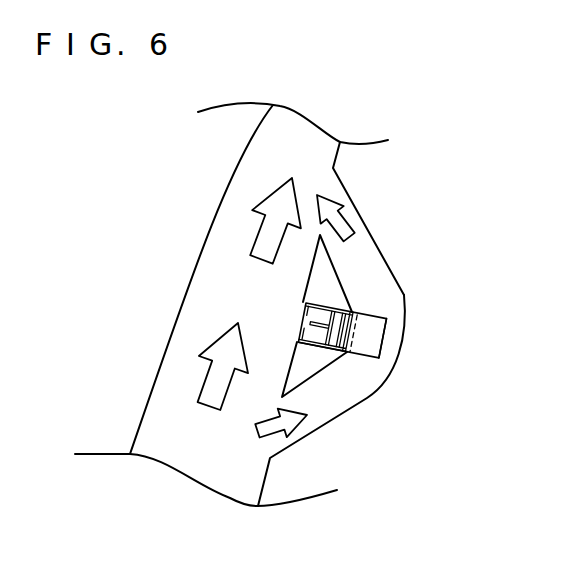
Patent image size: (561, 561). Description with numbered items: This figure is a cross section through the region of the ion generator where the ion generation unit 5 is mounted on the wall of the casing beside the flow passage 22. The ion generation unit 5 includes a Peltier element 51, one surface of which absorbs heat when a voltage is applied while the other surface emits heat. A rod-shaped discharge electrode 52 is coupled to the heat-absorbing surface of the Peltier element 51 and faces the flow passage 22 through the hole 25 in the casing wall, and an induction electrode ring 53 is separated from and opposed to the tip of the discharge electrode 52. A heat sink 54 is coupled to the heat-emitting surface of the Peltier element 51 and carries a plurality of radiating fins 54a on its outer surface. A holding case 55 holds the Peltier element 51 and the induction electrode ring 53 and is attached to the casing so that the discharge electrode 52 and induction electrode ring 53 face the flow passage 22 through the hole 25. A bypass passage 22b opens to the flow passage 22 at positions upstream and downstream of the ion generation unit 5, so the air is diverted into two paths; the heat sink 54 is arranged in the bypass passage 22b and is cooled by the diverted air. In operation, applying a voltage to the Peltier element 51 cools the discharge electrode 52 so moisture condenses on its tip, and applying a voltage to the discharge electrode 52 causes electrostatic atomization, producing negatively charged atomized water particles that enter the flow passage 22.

The flow passage 22 is at (257, 294).
The bypass passage 22b is at (345, 396).
The hole 25 is at (298, 307).
The ion generation unit 5 is at (319, 381).
The Peltier element 51 is at (350, 299).
The discharge electrode 52 is at (326, 301).
The induction electrode ring 53 is at (306, 332).
The heat sink 54 is at (356, 330).
The radiating fins 54a is at (388, 332).
The holding case 55 is at (312, 348).